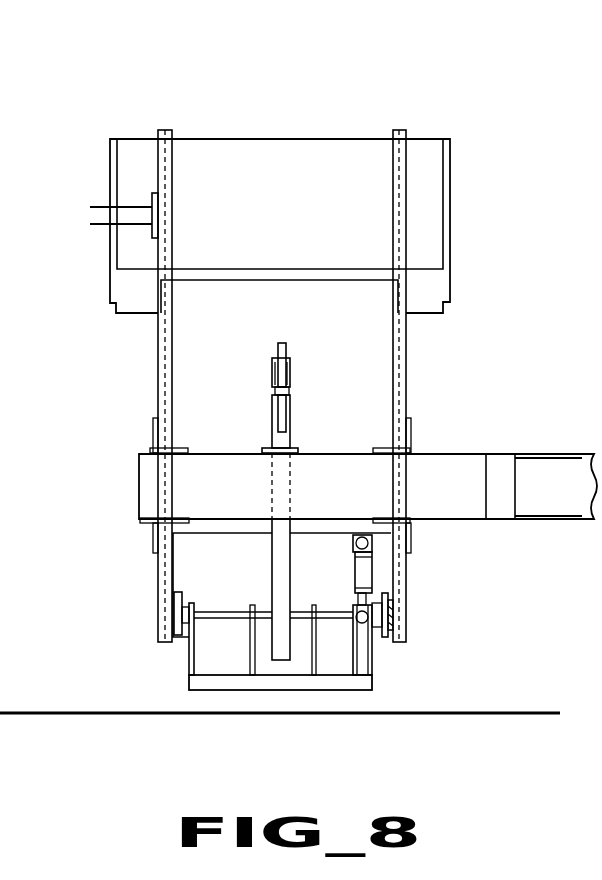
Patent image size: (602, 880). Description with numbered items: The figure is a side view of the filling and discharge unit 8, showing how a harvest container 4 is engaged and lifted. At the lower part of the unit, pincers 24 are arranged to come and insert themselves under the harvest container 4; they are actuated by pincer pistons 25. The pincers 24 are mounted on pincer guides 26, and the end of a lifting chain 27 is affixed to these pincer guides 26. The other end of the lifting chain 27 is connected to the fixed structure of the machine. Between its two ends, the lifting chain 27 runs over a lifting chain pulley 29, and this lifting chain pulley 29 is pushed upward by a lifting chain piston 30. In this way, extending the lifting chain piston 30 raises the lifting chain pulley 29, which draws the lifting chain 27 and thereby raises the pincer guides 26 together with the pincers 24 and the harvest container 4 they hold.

The transfer station assembly 8 is at (138, 94).
The harvest container 4 is at (293, 140).
The pincer guides 26 is at (437, 453).
The lifting chain pulley 29 is at (286, 351).
The lifting chain piston 30 is at (272, 418).
The lifting chain 27 is at (288, 408).
The pincer pistons 25 is at (373, 578).
The pincers 24 is at (373, 683).